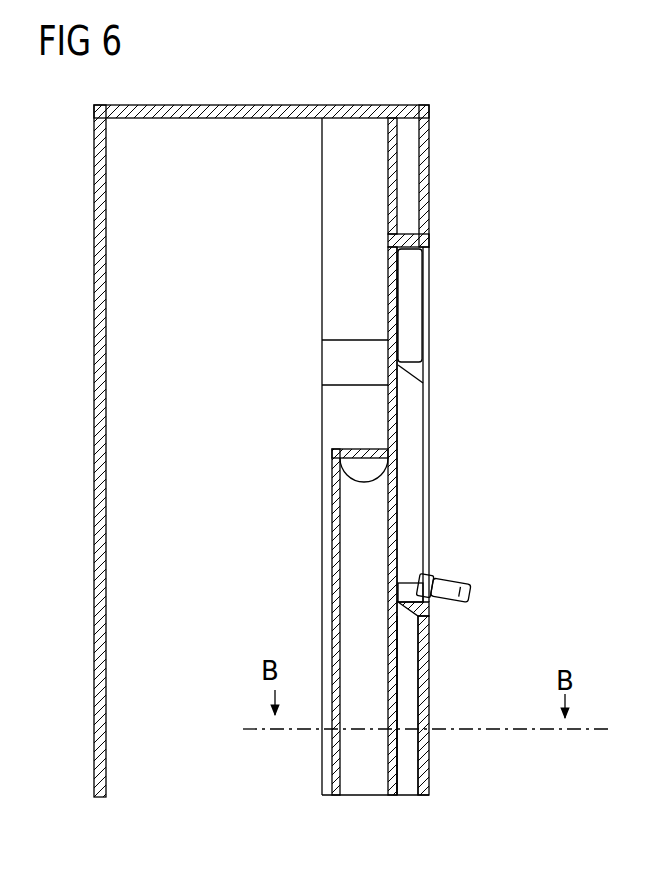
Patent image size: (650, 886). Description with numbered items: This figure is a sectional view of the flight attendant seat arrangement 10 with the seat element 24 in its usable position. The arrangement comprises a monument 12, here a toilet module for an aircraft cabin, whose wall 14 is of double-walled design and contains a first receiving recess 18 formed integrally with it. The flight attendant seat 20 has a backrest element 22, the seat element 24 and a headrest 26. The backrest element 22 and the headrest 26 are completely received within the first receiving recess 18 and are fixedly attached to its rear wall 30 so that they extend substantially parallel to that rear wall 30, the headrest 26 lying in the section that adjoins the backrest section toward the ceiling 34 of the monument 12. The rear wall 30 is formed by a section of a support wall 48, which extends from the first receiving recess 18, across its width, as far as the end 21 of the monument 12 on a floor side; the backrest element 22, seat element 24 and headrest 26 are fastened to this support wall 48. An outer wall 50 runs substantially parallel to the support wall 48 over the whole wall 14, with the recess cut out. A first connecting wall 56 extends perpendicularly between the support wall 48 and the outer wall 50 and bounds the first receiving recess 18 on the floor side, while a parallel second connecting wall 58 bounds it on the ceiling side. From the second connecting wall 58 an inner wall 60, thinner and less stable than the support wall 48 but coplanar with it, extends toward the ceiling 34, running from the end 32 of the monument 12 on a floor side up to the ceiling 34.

The flight attendant seat arrangement 10 is at (516, 170).
The monument 12 is at (94, 420).
The wall 14 is at (434, 134).
The first receiving recess 18 is at (420, 248).
The flight attendant seat 20 is at (557, 411).
The end of the monument on a floor side 21 is at (398, 793).
The backrest element 22 is at (424, 464).
The seat element 24 is at (471, 591).
The headrest 26 is at (422, 314).
The rear wall of the first receiving recess 30 is at (398, 410).
The end of the monument on a floor side 32 is at (229, 763).
The ceiling of the monument 34 is at (255, 104).
The support wall 48 is at (387, 770).
The outer wall 50 is at (430, 696).
The first connecting wall 56 is at (430, 616).
The second connecting wall 58 is at (397, 240).
The inner wall 60 is at (388, 174).